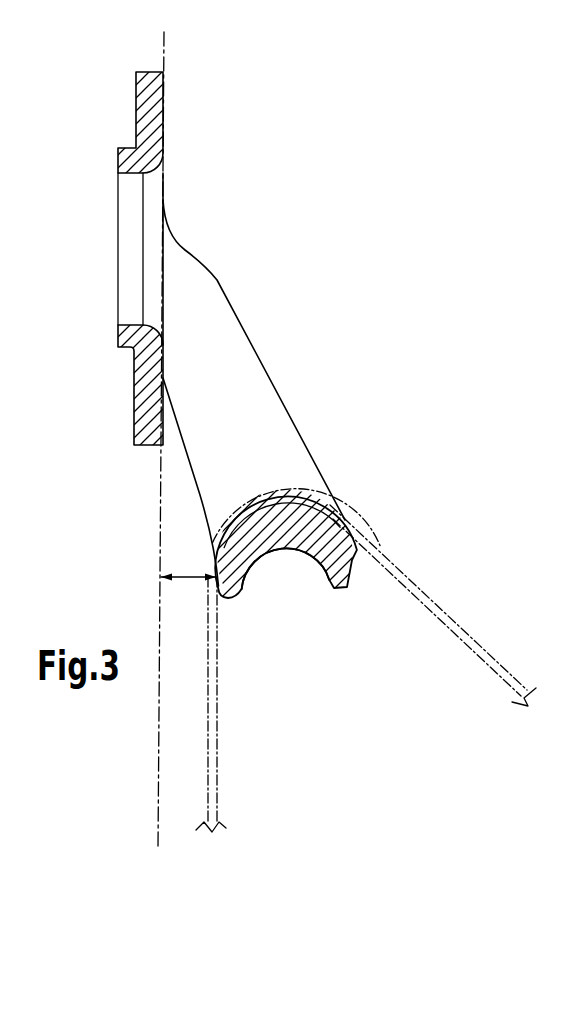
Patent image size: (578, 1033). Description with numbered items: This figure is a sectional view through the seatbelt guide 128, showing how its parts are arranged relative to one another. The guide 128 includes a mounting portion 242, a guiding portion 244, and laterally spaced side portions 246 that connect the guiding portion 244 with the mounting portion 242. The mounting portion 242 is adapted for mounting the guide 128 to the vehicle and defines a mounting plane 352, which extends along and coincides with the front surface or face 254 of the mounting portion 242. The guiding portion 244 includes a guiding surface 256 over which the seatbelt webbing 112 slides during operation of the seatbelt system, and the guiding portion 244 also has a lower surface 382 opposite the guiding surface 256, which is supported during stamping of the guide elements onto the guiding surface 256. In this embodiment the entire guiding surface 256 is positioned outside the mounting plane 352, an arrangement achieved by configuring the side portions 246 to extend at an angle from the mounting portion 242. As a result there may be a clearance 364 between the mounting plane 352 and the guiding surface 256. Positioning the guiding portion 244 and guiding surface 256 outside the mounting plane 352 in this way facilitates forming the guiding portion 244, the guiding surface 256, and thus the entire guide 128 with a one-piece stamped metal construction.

The mounting plane 352 is at (166, 50).
The front surface 254 is at (170, 126).
The mounting portion 242 is at (130, 280).
The guide 128 is at (290, 178).
The side portions 246 is at (232, 377).
The guiding portion 244 is at (342, 548).
The guiding surface 256 is at (272, 497).
The lower surface 382 is at (288, 531).
The clearance 364 is at (187, 577).
The seatbelt webbing 112 is at (415, 586).